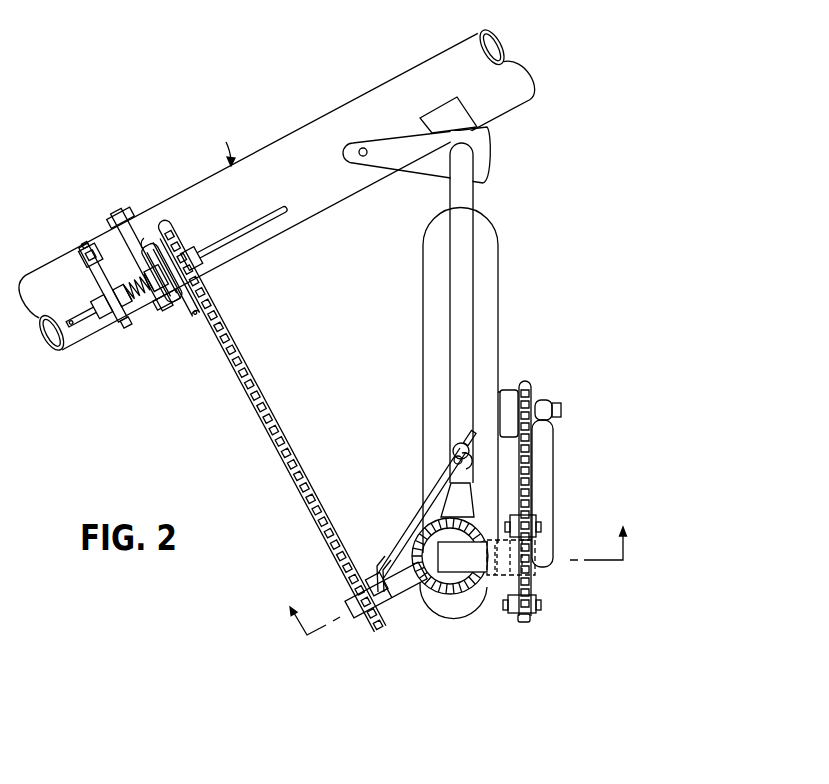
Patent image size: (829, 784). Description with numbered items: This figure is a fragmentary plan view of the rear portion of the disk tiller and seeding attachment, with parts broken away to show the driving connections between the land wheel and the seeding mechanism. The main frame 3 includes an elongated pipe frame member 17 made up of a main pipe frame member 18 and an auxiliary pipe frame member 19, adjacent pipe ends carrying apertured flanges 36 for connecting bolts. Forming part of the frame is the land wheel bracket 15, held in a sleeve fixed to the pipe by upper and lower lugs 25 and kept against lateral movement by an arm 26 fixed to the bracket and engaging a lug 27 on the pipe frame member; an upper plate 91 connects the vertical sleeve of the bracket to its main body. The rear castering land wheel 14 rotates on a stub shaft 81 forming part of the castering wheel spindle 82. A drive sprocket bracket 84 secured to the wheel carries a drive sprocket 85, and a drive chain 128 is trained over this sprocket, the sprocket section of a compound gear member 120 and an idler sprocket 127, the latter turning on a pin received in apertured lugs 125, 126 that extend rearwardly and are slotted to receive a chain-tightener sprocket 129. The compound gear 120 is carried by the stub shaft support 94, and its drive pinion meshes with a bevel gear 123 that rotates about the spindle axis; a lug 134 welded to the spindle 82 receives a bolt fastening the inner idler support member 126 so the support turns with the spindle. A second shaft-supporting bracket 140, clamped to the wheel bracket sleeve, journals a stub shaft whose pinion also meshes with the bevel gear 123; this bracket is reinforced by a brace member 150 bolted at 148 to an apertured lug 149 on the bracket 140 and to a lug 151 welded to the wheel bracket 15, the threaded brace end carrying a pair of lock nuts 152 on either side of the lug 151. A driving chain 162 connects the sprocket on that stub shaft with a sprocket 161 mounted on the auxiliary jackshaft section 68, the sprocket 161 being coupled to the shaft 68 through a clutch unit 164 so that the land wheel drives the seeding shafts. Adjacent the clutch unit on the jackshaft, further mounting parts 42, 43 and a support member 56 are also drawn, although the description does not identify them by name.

The main frame 3 is at (428, 376).
The rear castering land wheel 14 is at (503, 278).
The land wheel bracket 15 is at (453, 327).
The elongated pipe frame member 17 is at (333, 207).
The main pipe frame member 18 is at (37, 307).
The auxiliary pipe frame member 19 is at (338, 112).
The lugs 25 is at (447, 104).
The arm 26 is at (415, 167).
The lug 27 is at (363, 147).
The flanges 36 is at (118, 214).
The lower nut 42 is at (128, 325).
The upper clamp block 43 is at (88, 245).
The support plate 56 is at (90, 283).
The auxiliary jackshaft section 68 is at (253, 221).
The stub shaft 81 is at (548, 400).
The castering wheel spindle 82 is at (558, 488).
The drive sprocket bracket 84 is at (505, 388).
The drive sprocket 85 is at (530, 395).
The upper plate 91 is at (455, 493).
The stub shaft support 94 is at (470, 595).
The compound gear member 120 is at (492, 578).
The bevel gear 123 is at (451, 610).
The apertured lug 125 is at (537, 590).
The apertured lug 126 is at (537, 547).
The idler sprocket 127 is at (530, 620).
The drive chain 128 is at (538, 452).
The chain-tightener sprocket 129 is at (537, 526).
The lug 134 is at (490, 553).
The second shaft-supporting bracket 140 is at (401, 604).
The bolt 148 is at (390, 558).
The apertured lug 149 is at (372, 571).
The brace member 150 is at (410, 518).
The lug 151 is at (455, 450).
The lock nuts 152 is at (451, 467).
The sprocket 161 is at (200, 282).
The driving chain 162 is at (298, 462).
The clutch unit 164 is at (153, 242).